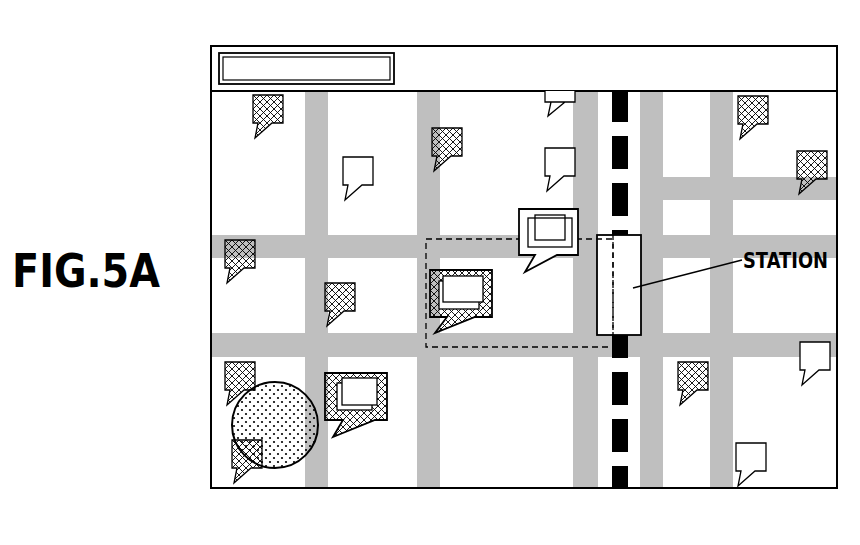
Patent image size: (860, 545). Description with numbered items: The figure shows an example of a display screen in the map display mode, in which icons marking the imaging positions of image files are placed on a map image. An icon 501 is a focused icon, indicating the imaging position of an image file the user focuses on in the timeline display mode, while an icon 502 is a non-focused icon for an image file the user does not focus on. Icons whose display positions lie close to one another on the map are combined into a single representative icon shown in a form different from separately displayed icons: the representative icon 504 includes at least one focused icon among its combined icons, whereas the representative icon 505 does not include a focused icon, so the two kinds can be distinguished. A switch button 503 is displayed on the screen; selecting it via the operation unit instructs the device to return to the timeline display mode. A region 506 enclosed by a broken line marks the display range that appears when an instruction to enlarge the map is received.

The icon 501 is at (224, 377).
The icon 502 is at (343, 172).
The switch button 503 is at (219, 70).
The representative icon 504 is at (372, 420).
The representative icon 505 is at (528, 209).
The region 506 is at (484, 347).